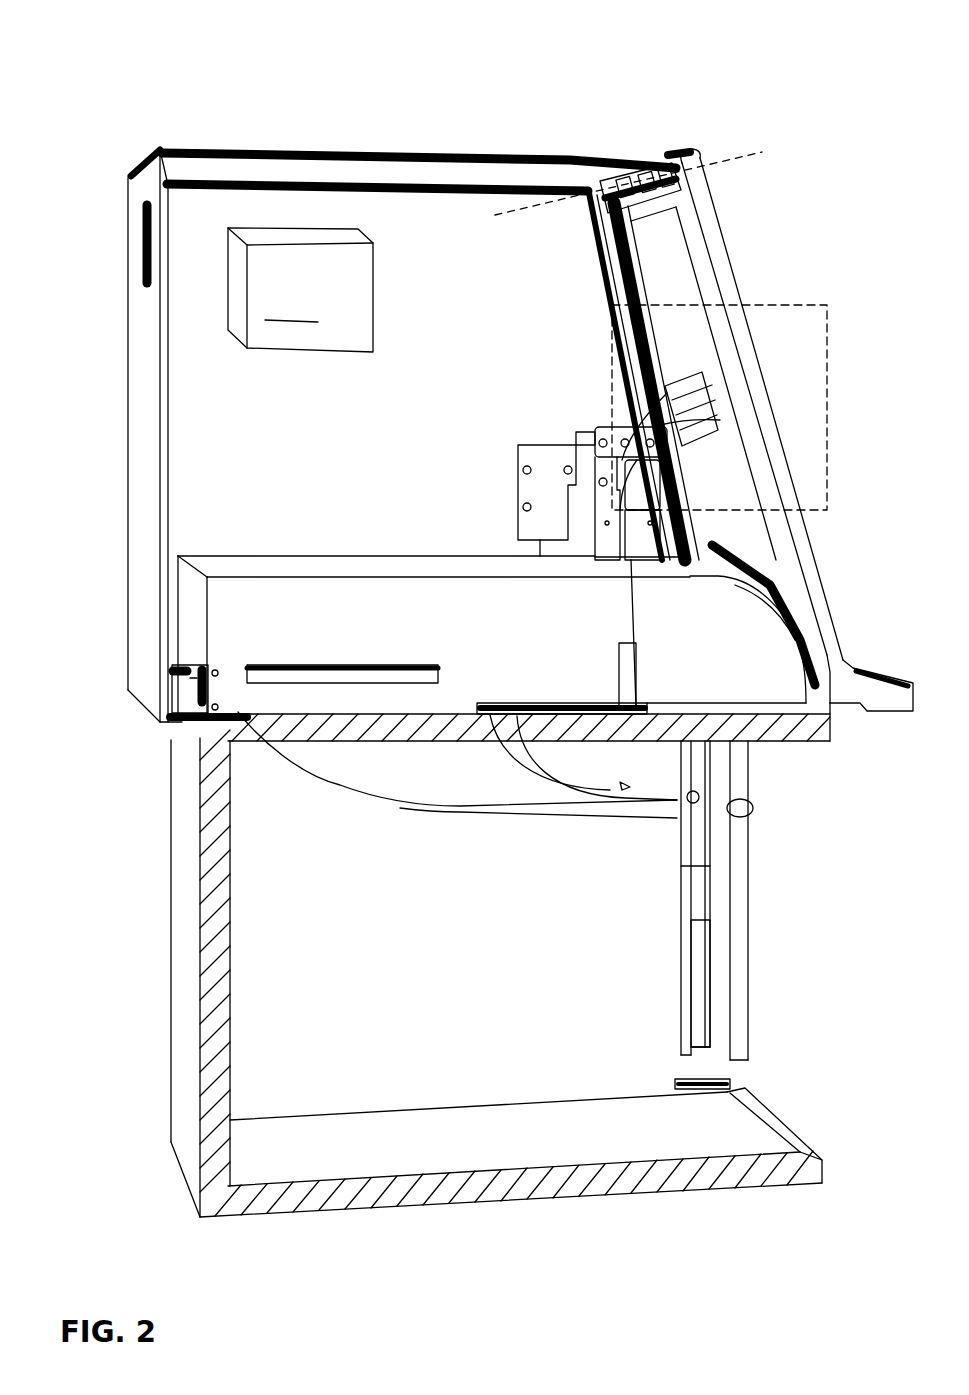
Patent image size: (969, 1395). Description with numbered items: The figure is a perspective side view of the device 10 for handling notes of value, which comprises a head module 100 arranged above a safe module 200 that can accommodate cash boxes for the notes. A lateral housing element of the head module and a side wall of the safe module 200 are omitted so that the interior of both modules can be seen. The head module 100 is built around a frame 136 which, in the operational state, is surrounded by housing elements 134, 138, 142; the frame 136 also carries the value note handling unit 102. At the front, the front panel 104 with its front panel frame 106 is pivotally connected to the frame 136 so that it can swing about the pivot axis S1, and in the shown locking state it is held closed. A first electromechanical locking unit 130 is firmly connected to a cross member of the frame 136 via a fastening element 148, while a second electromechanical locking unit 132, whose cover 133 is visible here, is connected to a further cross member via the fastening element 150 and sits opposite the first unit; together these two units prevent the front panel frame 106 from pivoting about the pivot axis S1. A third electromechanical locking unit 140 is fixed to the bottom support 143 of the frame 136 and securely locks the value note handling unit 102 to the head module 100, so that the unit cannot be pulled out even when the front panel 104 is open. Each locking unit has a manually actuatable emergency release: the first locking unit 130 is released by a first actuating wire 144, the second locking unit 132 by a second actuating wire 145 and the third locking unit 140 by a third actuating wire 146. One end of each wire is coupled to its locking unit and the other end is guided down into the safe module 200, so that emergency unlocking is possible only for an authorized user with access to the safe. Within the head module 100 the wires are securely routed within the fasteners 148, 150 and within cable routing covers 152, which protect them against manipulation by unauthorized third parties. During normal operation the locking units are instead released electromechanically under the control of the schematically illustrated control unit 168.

The device for handling notes of value 10 is at (200, 105).
The head module 100 is at (106, 345).
The value note handling unit 102 is at (322, 605).
The front panel 104 is at (750, 173).
The front panel frame 106 is at (718, 254).
The first electromechanical locking unit 130 is at (592, 410).
The second electromechanical locking unit 132 is at (693, 363).
The cover 133 is at (712, 426).
The housing element 134 is at (319, 215).
The frame 136 is at (506, 150).
The housing element 138 is at (418, 178).
The third electromechanical locking unit 140 is at (188, 736).
The housing element 142 is at (150, 515).
The bottom support 143 is at (843, 715).
The first actuating wire 144 is at (470, 740).
The second actuating wire 145 is at (634, 594).
The third actuating wire 146 is at (424, 806).
The fastening element 148 is at (542, 447).
The fastening element 150 is at (627, 560).
The cable routing cover 152 is at (490, 705).
The control unit 168 is at (300, 290).
The safe module 200 is at (115, 940).
The pivot axis S1 is at (752, 152).